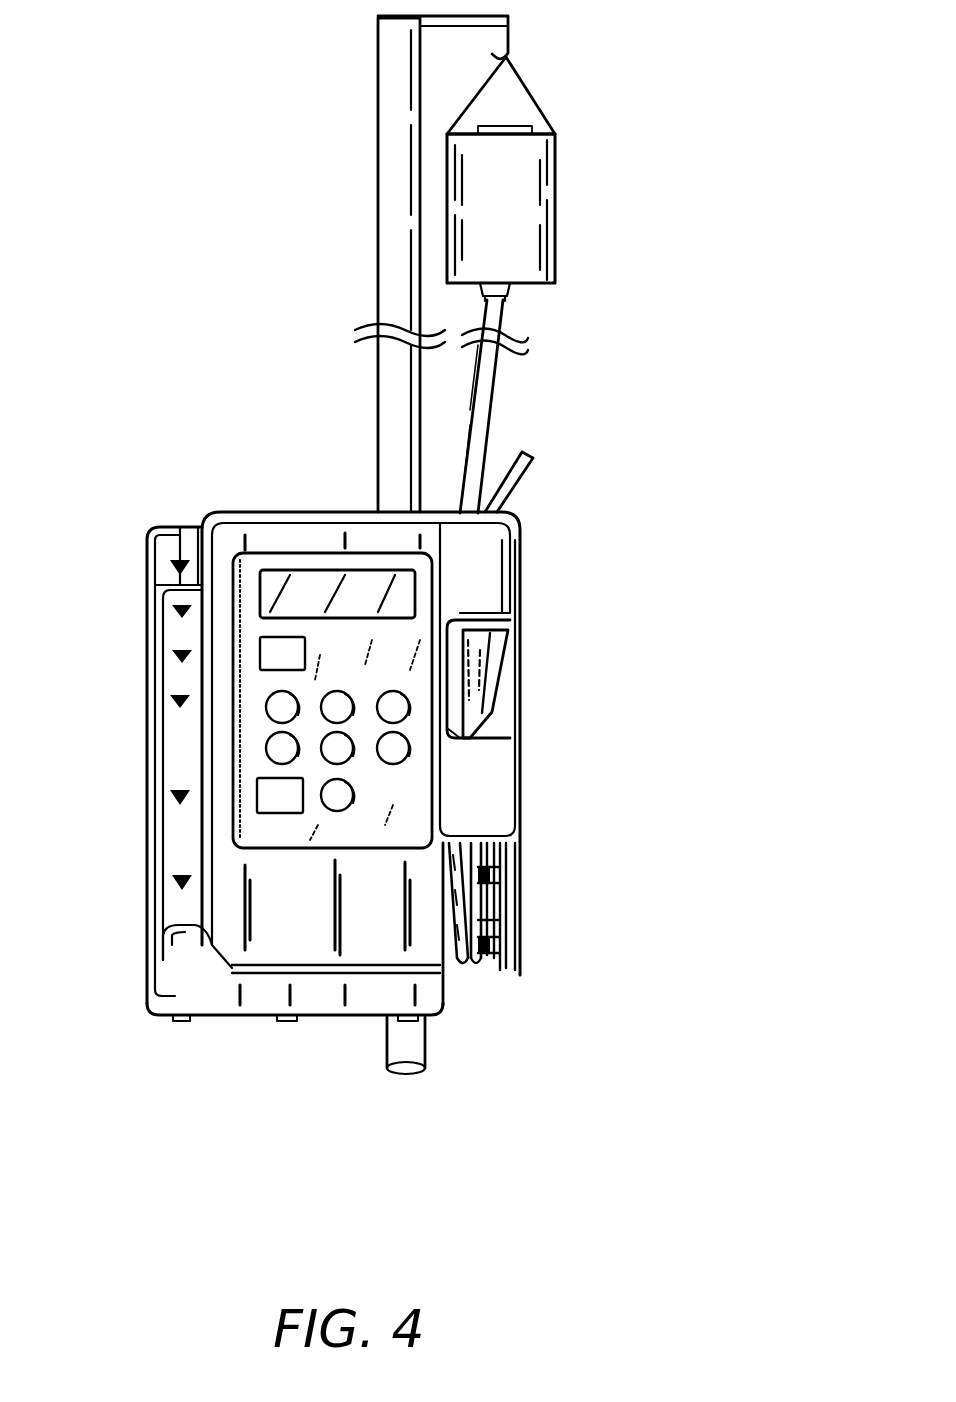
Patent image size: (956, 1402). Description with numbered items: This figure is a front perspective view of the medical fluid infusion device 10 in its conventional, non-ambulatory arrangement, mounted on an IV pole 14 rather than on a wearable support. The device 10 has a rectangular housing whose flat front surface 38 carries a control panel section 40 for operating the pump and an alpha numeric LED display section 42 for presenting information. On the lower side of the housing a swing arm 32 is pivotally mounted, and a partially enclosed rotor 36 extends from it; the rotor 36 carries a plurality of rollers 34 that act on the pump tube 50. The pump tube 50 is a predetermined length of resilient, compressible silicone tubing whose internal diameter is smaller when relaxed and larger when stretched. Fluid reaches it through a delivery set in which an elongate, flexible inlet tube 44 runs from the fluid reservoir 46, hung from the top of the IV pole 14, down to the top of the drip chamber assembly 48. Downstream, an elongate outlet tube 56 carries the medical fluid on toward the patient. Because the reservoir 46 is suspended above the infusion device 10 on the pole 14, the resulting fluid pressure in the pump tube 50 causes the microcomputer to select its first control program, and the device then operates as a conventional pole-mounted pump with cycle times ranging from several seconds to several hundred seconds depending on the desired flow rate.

The fluid infusion device 10 is at (200, 512).
The IV pole 14 is at (370, 288).
The swing arm 32 is at (512, 673).
The rollers 34 is at (460, 948).
The rotor 36 is at (505, 910).
The front surface 38 is at (310, 936).
The control panel section 40 is at (240, 757).
The alpha numeric LED display section 42 is at (292, 578).
The inlet tube 44 is at (497, 385).
The fluid reservoir 46 is at (517, 207).
The drip chamber assembly 48 is at (480, 637).
The pump tube 50 is at (478, 966).
The outlet tube 56 is at (515, 485).